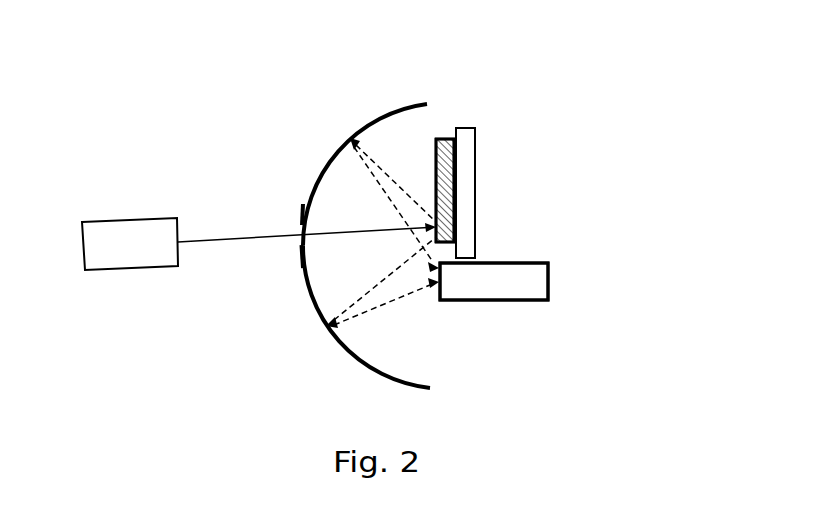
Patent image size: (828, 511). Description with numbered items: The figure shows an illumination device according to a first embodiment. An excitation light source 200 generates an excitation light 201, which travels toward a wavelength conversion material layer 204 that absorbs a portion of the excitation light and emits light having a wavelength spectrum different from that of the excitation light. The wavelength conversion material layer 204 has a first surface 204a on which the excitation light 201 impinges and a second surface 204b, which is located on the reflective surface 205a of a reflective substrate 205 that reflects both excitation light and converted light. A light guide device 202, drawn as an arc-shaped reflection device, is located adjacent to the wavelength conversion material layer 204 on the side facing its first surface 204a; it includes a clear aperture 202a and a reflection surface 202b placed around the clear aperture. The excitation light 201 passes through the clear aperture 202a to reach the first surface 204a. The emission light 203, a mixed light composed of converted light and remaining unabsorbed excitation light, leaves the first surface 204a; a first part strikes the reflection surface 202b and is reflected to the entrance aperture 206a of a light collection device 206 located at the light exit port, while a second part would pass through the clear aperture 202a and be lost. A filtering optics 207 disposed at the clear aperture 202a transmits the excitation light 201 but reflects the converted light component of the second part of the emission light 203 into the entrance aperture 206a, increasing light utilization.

The excitation light source 200 is at (132, 232).
The excitation light 201 is at (213, 242).
The light guide device 202 is at (325, 142).
The clear aperture 202a is at (302, 243).
The reflection surface 202b is at (342, 347).
The emission light 203 is at (380, 305).
The wavelength conversion material layer 204 is at (442, 137).
The first surface 204a is at (436, 140).
The second surface 204b is at (455, 168).
The reflective substrate 205 is at (467, 143).
The reflective surface 205a is at (455, 197).
The light collection device 206 is at (533, 282).
The entrance aperture 206a is at (442, 290).
The filtering optics 207 is at (308, 218).